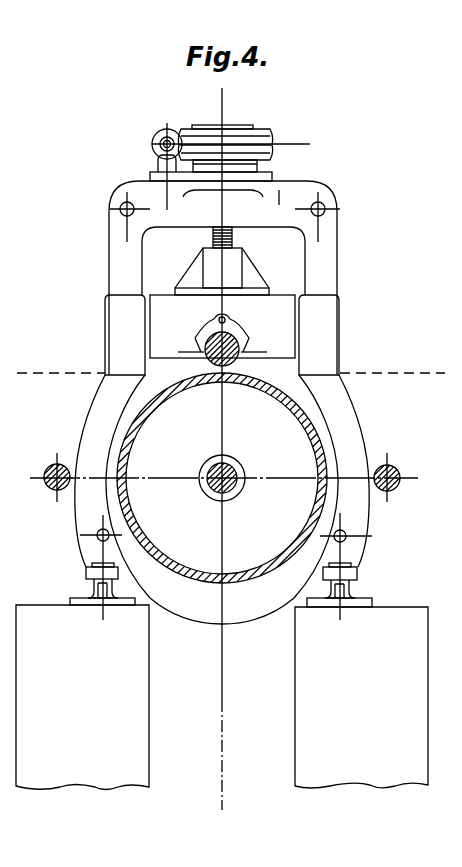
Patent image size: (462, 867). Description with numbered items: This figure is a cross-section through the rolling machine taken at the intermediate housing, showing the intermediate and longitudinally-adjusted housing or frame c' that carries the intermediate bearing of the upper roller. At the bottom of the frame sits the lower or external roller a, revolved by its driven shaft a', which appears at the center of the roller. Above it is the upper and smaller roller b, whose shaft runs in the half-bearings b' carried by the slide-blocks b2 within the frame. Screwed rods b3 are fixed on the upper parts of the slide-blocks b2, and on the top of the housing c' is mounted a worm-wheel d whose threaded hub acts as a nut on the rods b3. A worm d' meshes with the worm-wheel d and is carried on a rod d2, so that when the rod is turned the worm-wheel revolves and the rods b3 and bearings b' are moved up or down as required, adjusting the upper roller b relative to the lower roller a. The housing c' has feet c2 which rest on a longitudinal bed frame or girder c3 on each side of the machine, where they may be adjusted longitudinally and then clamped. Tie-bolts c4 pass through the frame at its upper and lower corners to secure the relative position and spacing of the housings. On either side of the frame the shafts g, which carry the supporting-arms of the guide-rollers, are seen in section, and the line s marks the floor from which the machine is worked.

The lower or external roller a is at (222, 478).
The driven shaft a' is at (211, 483).
The upper and smaller roller b is at (196, 358).
The half-bearings b' is at (240, 316).
The slide-blocks b2 is at (222, 303).
The screwed rods b3 is at (232, 234).
The intermediate housing or frame c' is at (220, 413).
The feet c2 is at (91, 572).
The longitudinal bed frame or girder c3 is at (103, 593).
The tie-bolts c4 is at (121, 207).
The worm-wheel d is at (224, 146).
The worm d' is at (217, 161).
The rod d2 is at (159, 148).
The shafts g is at (49, 468).
The floor line s is at (22, 372).